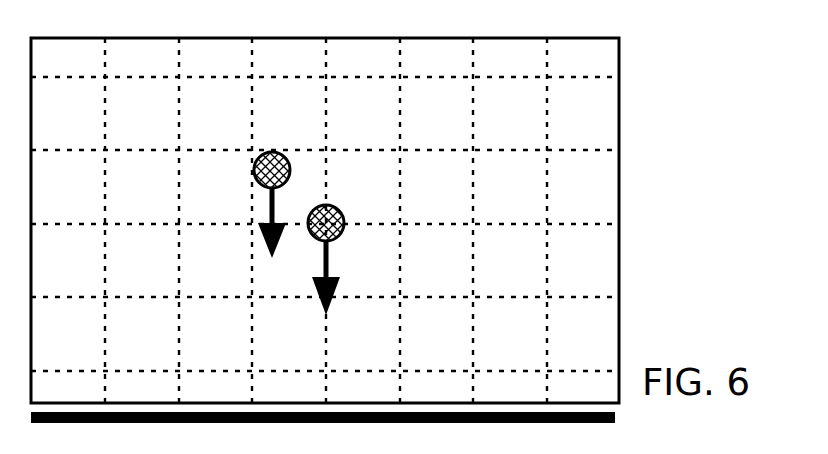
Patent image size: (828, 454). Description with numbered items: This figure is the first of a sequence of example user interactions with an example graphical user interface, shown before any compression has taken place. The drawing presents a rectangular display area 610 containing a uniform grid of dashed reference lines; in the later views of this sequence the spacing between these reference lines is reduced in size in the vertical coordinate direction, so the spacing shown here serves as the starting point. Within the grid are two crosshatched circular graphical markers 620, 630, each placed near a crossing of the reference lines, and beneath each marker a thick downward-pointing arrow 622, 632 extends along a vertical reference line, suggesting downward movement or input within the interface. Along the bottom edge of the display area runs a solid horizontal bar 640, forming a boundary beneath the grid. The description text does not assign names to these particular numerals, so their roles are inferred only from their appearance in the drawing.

The grid region / map area 610 is at (55, 38).
The first object marker 620 is at (256, 164).
The first motion direction arrow 622 is at (266, 198).
The second object marker 630 is at (346, 221).
The second motion direction arrow 632 is at (330, 274).
The boundary bar 640 is at (617, 416).